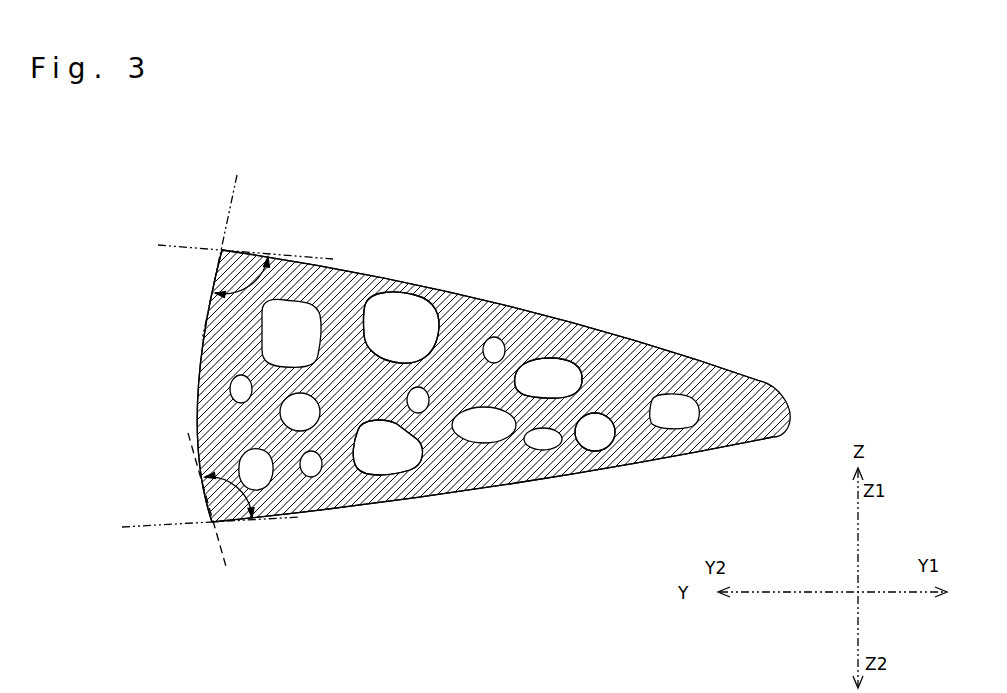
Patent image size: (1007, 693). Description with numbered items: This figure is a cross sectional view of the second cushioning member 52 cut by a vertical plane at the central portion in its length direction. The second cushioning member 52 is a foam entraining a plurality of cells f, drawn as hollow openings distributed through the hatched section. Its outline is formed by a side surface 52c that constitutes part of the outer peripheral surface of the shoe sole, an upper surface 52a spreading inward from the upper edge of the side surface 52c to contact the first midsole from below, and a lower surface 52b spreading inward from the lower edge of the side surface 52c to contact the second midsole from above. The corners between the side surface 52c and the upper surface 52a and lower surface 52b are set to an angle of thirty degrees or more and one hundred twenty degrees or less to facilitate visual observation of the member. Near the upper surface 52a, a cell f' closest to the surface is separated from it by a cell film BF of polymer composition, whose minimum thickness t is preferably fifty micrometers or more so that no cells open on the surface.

The second cushioning member 52 is at (160, 151).
The upper surface 52a is at (500, 290).
The lower surface 52b is at (473, 502).
The side surface 52c is at (190, 408).
The cells f is at (484, 417).
The cell closest to the surface f' is at (400, 272).
The minimum thickness of cell film t is at (400, 325).
The cell film BF is at (427, 290).